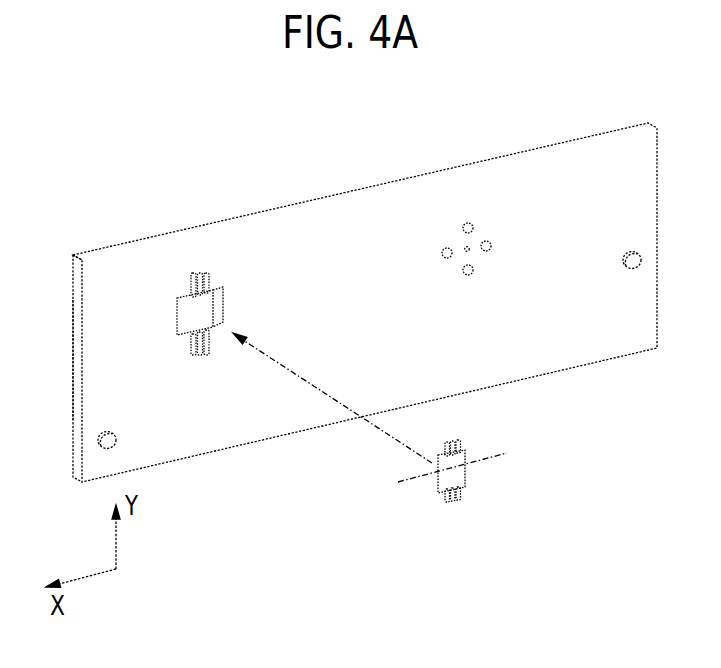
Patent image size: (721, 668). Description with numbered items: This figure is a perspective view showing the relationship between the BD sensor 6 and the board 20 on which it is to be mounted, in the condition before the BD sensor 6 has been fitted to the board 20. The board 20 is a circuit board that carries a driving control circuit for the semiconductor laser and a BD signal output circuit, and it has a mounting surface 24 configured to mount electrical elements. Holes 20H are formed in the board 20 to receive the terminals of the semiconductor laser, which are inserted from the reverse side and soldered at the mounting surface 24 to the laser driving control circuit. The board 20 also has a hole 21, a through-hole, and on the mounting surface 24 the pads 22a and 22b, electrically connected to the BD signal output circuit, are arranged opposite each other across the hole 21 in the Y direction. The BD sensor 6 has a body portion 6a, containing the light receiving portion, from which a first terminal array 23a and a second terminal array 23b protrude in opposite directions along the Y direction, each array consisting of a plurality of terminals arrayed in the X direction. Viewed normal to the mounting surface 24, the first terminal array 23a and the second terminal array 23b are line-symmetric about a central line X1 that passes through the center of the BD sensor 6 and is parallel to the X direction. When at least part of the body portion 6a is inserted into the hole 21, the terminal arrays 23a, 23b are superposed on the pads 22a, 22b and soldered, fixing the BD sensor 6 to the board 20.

The board 20 is at (519, 172).
The holes 20H is at (498, 218).
The hole 21 is at (205, 307).
The pad 22a is at (191, 281).
The pad 22b is at (190, 348).
The mounting surface 24 is at (92, 326).
The BD sensor 6 is at (391, 508).
The body portion 6a is at (460, 476).
The first terminal array 23a is at (461, 444).
The second terminal array 23b is at (444, 498).
The central line X1 is at (500, 457).